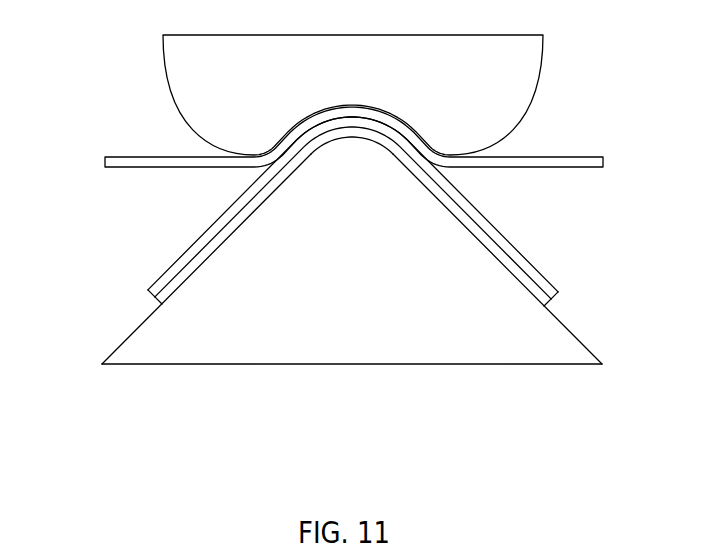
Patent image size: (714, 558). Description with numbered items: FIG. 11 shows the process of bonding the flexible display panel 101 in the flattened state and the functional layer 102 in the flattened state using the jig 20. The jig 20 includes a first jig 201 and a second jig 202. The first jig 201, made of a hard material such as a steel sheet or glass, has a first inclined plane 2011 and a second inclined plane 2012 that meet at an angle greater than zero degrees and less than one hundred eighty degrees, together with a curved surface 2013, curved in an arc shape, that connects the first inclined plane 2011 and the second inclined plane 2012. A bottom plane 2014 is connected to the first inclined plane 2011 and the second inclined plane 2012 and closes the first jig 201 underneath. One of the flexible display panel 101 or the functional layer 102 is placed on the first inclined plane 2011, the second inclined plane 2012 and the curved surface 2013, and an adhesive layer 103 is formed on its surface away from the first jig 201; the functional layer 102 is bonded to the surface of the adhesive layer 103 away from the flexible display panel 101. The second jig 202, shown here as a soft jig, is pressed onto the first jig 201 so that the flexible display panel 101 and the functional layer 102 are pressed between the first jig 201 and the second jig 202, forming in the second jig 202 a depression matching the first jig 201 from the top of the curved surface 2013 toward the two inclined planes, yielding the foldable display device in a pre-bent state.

The jig 20 is at (343, 247).
The first jig 201 is at (343, 298).
The second jig 202 is at (520, 90).
The first inclined plane 2011 is at (569, 331).
The second inclined plane 2012 is at (134, 331).
The curved surface 2013 is at (350, 138).
The bottom plane 2014 is at (355, 364).
The flexible display panel 101 is at (497, 250).
The functional layer 102 is at (512, 162).
The adhesive layer 103 is at (492, 232).